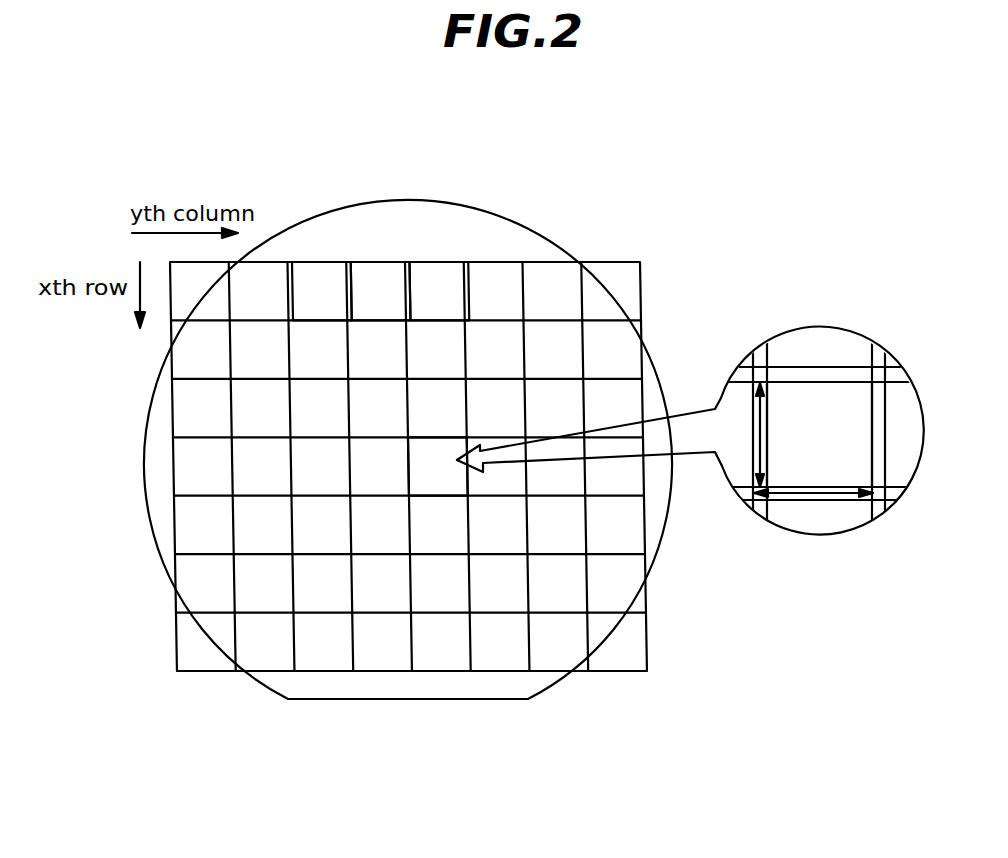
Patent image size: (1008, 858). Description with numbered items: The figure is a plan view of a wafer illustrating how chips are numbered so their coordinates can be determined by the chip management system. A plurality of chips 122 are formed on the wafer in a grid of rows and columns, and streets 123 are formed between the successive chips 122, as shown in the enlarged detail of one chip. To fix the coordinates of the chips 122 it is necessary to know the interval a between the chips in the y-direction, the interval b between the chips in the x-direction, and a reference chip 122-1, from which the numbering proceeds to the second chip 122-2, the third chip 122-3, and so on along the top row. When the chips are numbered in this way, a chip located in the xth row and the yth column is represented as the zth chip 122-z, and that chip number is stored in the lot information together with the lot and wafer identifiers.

The reference chip 122-1 is at (308, 286).
The second chip 122-2 is at (377, 278).
The third chip 122-3 is at (435, 278).
The zth chip 122-z is at (447, 448).
The chip 122 is at (797, 413).
The street 123 is at (844, 377).
The interval between chips in the y-direction a is at (820, 493).
The interval between chips in the x-direction b is at (760, 450).